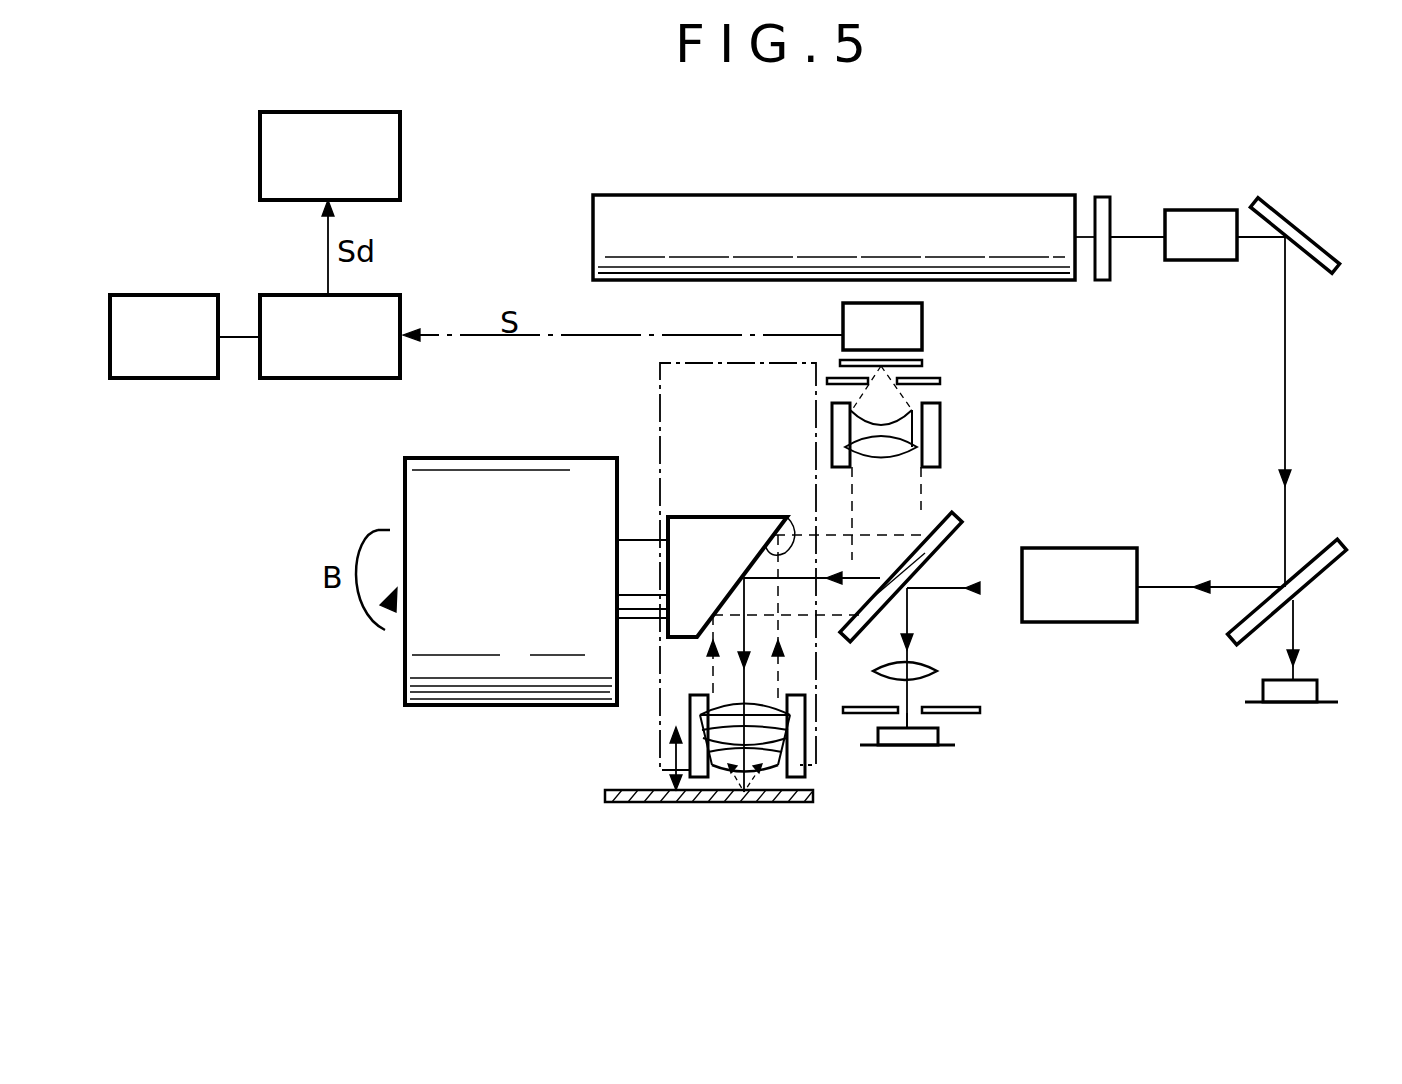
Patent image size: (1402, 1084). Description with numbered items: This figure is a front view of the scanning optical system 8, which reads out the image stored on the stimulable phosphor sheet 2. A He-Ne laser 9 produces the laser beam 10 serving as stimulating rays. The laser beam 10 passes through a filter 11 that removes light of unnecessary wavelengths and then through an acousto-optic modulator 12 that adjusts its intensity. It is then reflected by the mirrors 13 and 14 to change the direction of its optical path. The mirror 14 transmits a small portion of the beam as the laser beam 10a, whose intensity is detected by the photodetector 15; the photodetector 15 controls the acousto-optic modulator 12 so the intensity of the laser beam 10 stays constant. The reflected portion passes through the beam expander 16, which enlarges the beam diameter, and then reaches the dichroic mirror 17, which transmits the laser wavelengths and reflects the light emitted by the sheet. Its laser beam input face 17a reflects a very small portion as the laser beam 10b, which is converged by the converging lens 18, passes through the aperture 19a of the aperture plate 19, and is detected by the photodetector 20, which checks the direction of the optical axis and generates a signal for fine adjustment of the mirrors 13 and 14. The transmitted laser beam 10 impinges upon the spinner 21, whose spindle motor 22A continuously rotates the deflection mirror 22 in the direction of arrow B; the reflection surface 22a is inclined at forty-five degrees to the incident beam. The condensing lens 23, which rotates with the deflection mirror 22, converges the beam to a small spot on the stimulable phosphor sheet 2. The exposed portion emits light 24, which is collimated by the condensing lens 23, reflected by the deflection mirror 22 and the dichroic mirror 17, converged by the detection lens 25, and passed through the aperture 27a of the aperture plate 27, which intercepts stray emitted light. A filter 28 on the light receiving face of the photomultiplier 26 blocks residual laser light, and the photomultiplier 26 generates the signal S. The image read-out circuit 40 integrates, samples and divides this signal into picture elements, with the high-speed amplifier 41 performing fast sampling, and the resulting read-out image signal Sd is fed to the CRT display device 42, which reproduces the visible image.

The stimulable phosphor sheet 2 is at (690, 804).
The scanning optical system 8 is at (552, 285).
The He-Ne laser 9 is at (840, 197).
The laser beam 10 is at (1136, 237).
The laser beam 10a is at (1296, 640).
The laser beam 10b is at (912, 612).
The filter 11 is at (1106, 197).
The acousto-optic modulator 12 is at (1218, 210).
The mirror 13 is at (1333, 258).
The mirror 14 is at (1332, 570).
The photodetector 15 is at (1295, 700).
The beam expander 16 is at (1138, 548).
The dichroic mirror 17 is at (950, 518).
The laser beam input face 17a is at (950, 548).
The converging lens 18 is at (938, 675).
The aperture plate 19 is at (980, 712).
The aperture 19a is at (915, 716).
The photodetector 20 is at (928, 742).
The spinner 21 is at (580, 430).
The deflection mirror 22 is at (695, 530).
The reflection surface 22a is at (797, 525).
The spindle motor 22A is at (525, 685).
The condensing lens 23 is at (815, 738).
The emitted light 24 is at (925, 490).
The detection lens 25 is at (950, 430).
The photomultiplier 26 is at (922, 312).
The aperture plate 27 is at (940, 381).
The aperture 27a is at (890, 376).
The filter 28 is at (922, 362).
The image read-out circuit 40 is at (355, 356).
The high-speed amplifier 41 is at (196, 356).
The CRT display device 42 is at (350, 174).